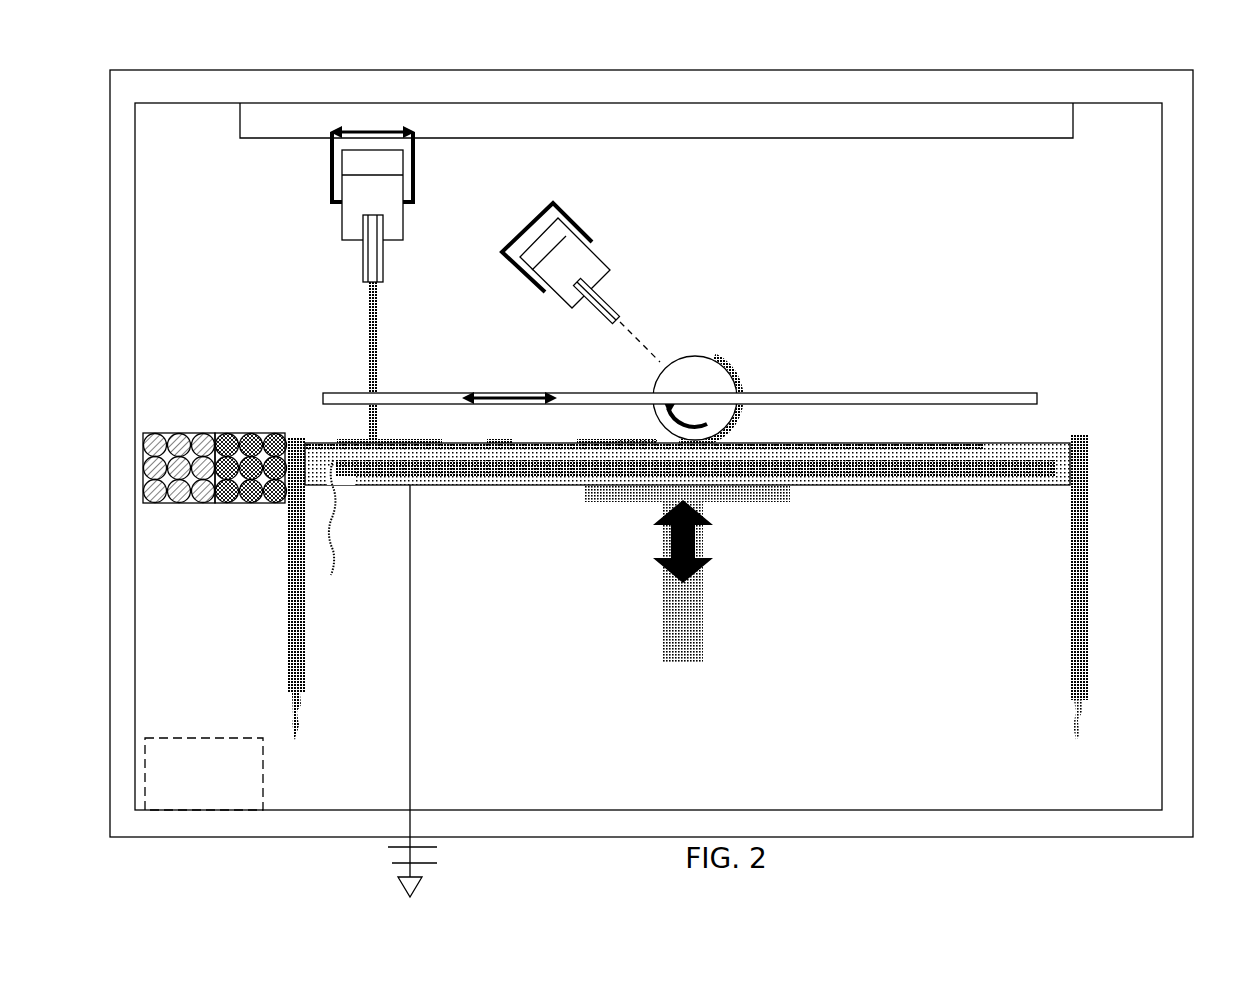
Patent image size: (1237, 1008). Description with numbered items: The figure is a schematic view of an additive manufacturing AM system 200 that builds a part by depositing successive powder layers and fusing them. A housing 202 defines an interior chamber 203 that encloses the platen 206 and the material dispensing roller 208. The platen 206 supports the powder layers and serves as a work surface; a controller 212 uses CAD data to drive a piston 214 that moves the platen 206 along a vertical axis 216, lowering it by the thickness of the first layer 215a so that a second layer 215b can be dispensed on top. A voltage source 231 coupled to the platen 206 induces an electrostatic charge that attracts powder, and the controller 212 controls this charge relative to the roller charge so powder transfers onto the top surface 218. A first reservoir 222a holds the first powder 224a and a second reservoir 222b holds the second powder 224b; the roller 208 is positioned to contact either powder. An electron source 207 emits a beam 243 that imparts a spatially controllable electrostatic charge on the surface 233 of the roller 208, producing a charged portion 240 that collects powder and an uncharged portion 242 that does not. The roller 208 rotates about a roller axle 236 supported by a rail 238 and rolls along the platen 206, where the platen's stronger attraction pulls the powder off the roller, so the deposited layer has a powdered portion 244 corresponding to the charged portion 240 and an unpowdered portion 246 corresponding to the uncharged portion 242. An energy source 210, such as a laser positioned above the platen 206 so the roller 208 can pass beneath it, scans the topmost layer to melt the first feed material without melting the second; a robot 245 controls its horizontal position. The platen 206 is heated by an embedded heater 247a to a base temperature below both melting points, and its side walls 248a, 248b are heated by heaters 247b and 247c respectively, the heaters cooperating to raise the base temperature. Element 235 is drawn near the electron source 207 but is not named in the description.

The AM system 200 is at (1047, 62).
The housing 202 is at (1170, 285).
The interior chamber 203 is at (1050, 205).
The platen 206 is at (440, 481).
The electron source 207 is at (570, 271).
The material dispensing roller 208 is at (695, 398).
The energy source 210 is at (403, 226).
The controller 212 is at (204, 774).
The piston 214 is at (704, 617).
The first layer of powder 215a is at (987, 444).
The second layer of powder 215b is at (712, 441).
The axis 216 is at (705, 566).
The top surface 218 is at (895, 462).
The first reservoir 222a is at (258, 435).
The second reservoir 222b is at (185, 504).
The first powder 224a is at (376, 461).
The second powder 224b is at (660, 451).
The voltage source 231 is at (392, 861).
The surface of the roller 233 is at (670, 362).
The dispenser housing 235 is at (553, 214).
The roller axle 236 is at (700, 399).
The rail 238 is at (870, 395).
The charged portion 240 is at (724, 360).
The uncharged portion 242 is at (742, 393).
The beam 243 is at (642, 342).
The powdered portion 244 is at (606, 443).
The robot 245 is at (412, 165).
The unpowdered portion 246 is at (535, 443).
The embedded heater 247a is at (562, 473).
The heater 247b is at (300, 632).
The heater 247c is at (1080, 646).
The side wall 248a is at (290, 612).
The side wall 248b is at (1070, 628).